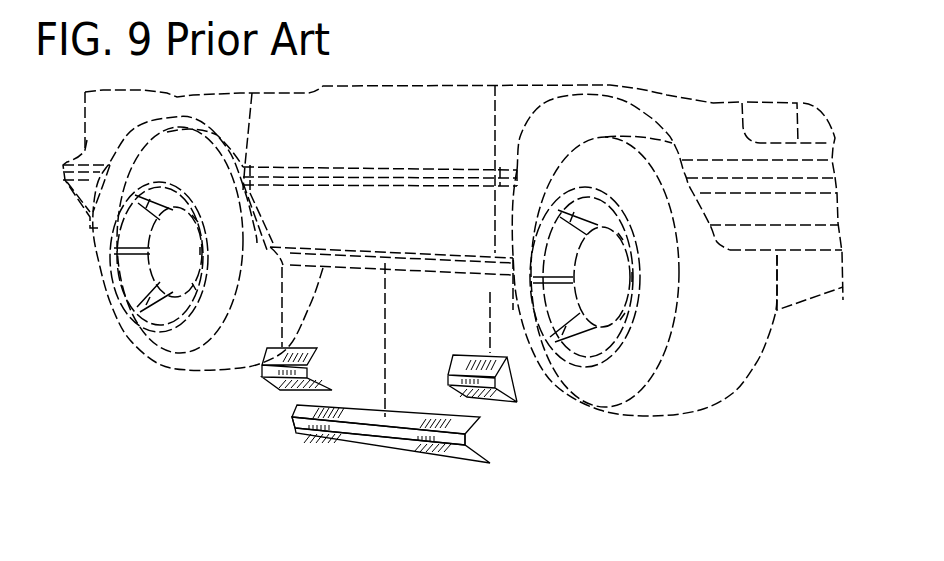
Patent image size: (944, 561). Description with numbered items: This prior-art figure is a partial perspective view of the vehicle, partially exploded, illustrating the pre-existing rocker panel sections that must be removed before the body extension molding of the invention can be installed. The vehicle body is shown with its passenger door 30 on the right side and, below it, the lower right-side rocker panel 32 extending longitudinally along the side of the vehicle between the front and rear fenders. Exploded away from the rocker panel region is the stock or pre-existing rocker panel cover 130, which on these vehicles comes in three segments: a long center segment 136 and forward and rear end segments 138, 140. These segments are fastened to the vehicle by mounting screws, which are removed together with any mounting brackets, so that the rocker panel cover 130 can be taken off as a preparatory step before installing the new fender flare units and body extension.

The passenger door 30 is at (413, 118).
The lower right-side rocker panel 32 is at (762, 212).
The pre-existing rocker panel cover 130 is at (527, 467).
The long center segment 136 is at (377, 430).
The forward end segment 138 is at (478, 390).
The rear end segment 140 is at (275, 372).